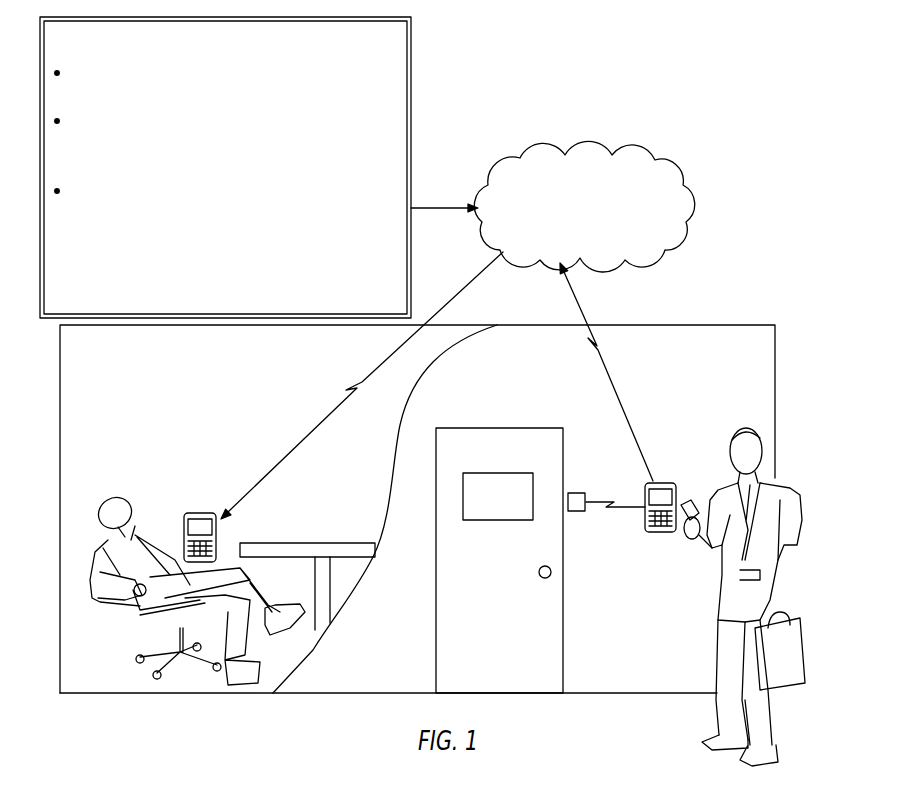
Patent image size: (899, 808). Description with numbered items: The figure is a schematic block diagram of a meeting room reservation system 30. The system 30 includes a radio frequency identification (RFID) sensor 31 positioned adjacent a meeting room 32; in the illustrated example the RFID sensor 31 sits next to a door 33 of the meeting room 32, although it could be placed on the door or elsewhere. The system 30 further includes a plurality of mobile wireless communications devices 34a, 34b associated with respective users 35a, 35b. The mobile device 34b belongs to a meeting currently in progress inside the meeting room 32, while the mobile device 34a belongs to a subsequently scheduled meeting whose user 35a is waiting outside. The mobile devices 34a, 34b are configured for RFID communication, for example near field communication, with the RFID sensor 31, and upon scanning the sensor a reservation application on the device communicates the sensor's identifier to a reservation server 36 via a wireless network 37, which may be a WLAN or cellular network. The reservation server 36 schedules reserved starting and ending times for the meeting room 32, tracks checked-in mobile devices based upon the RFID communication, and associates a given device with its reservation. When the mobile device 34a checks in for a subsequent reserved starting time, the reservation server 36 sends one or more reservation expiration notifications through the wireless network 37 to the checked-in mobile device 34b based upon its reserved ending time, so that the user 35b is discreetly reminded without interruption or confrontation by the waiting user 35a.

The meeting room reservation system 30 is at (712, 102).
The radio frequency identification (RFID) sensor 31 is at (577, 511).
The meeting room 32 is at (750, 325).
The door 33 is at (523, 685).
The mobile wireless communications device 34a is at (667, 483).
The mobile wireless communications device 34b is at (202, 513).
The user 35a is at (790, 490).
The user 35b is at (92, 548).
The reservation server 36 is at (40, 155).
The wireless network 37 is at (633, 153).